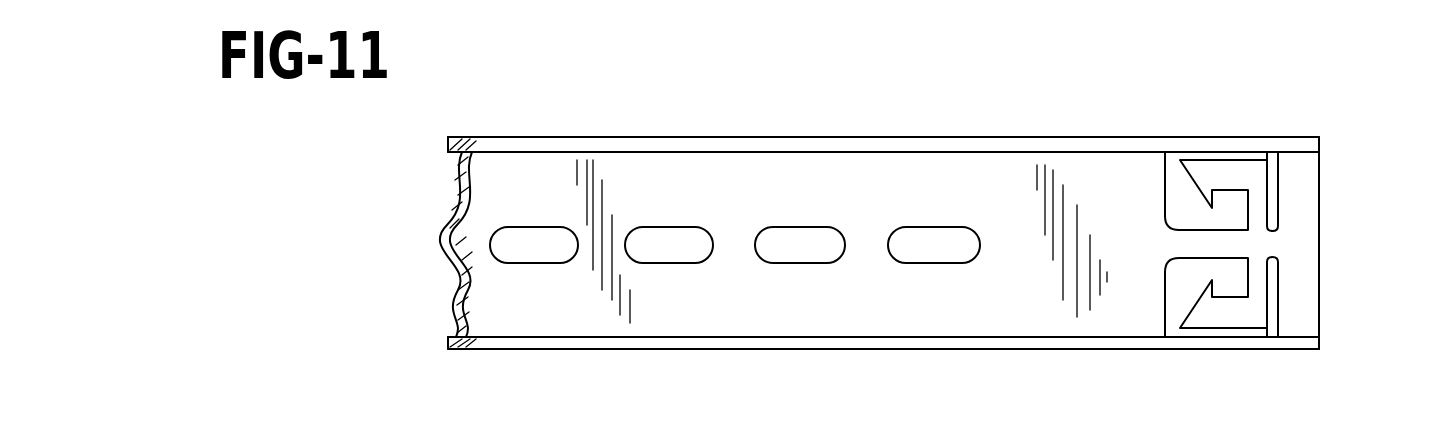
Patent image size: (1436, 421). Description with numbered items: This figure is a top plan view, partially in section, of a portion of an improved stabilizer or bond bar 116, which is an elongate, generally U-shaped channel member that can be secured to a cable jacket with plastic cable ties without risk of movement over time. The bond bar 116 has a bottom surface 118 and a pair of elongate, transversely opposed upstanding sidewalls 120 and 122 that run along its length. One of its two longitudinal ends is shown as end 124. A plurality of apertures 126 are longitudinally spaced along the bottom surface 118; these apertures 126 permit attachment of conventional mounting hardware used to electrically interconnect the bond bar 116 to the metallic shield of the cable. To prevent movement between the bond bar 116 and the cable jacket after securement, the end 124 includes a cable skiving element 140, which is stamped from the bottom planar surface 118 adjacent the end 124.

The bond bar 116 is at (859, 79).
The bottom surface 118 is at (820, 310).
The sidewall 120 is at (972, 137).
The sidewall 122 is at (947, 343).
The end 124 is at (1290, 229).
The apertures 126 is at (547, 237).
The cable skiving element 140 is at (1231, 212).